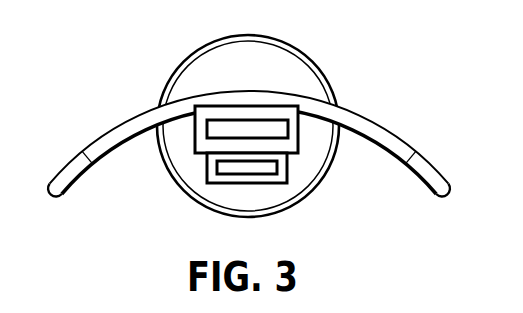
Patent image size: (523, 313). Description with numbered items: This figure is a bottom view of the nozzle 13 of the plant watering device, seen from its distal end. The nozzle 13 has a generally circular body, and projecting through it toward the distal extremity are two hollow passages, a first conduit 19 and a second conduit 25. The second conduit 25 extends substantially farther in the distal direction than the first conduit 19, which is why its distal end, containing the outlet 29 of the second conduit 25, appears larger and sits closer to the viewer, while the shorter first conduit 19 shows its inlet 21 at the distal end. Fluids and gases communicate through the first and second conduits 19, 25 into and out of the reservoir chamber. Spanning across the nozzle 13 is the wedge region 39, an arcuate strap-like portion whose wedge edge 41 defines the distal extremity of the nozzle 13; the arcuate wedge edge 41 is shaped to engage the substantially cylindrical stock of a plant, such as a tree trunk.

The nozzle 13 is at (350, 78).
The wedge region 39 is at (113, 128).
The wedge edge 41 is at (373, 124).
The second conduit 25 is at (299, 153).
The outlet of second conduit 29 is at (284, 132).
The first conduit 19 is at (207, 184).
The inlet of first conduit 21 is at (217, 167).